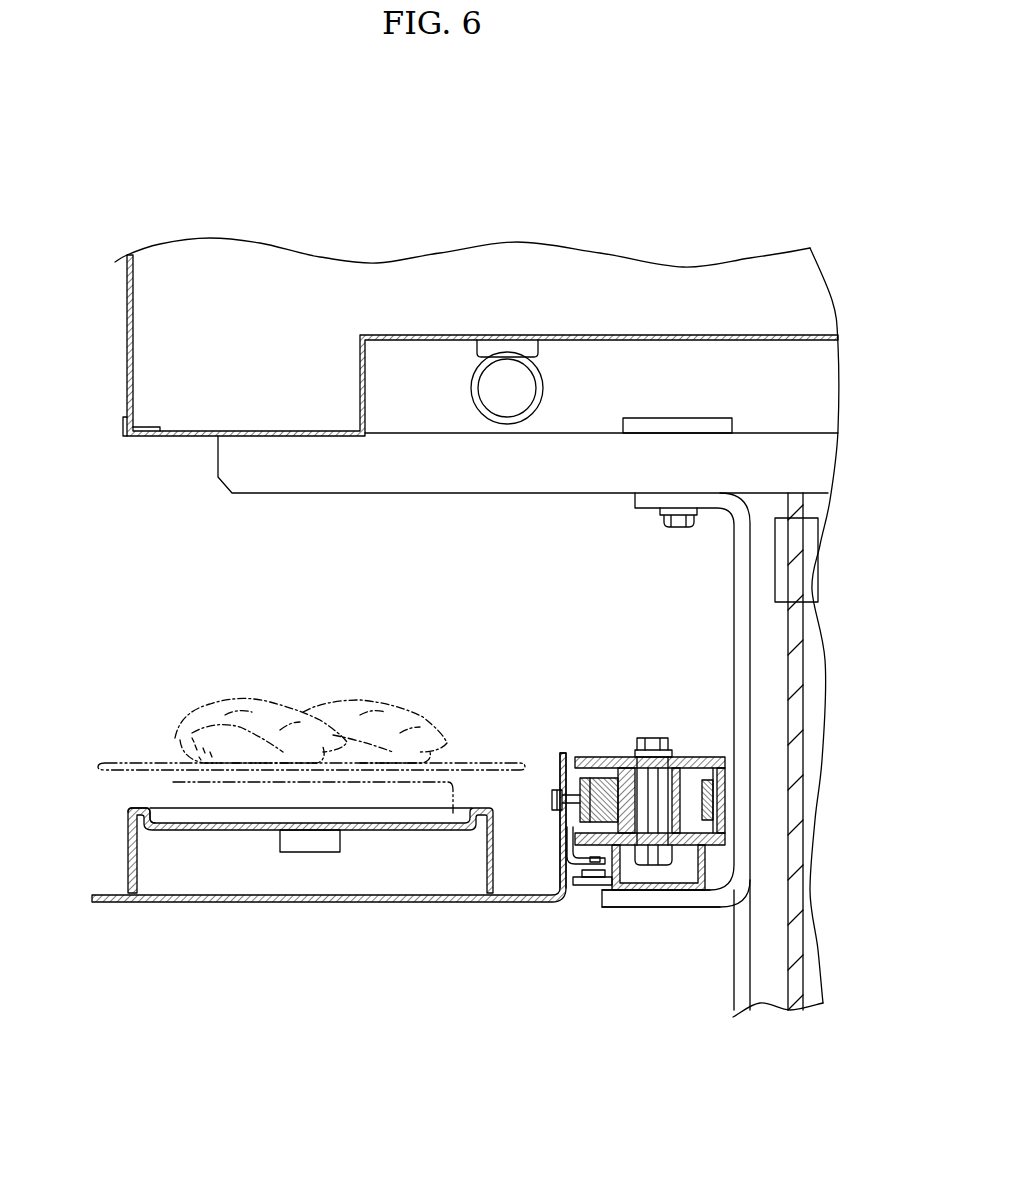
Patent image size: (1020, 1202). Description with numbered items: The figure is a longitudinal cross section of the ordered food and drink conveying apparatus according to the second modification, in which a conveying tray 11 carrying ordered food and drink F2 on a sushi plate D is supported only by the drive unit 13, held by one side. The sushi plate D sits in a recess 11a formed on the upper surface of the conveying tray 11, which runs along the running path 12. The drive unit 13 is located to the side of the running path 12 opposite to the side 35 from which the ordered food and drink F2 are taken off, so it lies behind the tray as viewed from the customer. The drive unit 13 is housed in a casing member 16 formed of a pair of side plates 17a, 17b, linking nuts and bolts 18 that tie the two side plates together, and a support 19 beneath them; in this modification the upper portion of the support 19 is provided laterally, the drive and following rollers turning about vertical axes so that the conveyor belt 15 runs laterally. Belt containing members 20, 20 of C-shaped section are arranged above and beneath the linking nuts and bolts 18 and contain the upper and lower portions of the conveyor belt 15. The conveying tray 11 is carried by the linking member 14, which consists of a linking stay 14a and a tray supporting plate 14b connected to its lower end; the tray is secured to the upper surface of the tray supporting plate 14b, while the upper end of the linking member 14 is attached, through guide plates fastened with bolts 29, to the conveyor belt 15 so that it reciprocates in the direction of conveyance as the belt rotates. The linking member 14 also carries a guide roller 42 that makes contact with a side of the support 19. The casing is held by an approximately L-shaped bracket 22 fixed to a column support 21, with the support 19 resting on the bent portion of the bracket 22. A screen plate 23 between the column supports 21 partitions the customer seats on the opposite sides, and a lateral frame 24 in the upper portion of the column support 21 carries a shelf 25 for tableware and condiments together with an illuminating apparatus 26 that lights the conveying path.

The conveying tray 11 is at (116, 846).
The recess 11a is at (170, 822).
The running path 12 is at (305, 873).
The drive unit 13 is at (649, 759).
The linking member 14 is at (334, 895).
The linking stay 14a is at (565, 832).
The tray supporting plate 14b is at (473, 902).
The conveyor belt 15 is at (578, 785).
The casing member 16 is at (665, 755).
The side plate 17a is at (632, 900).
The side plate 17b is at (722, 757).
The linking nuts and bolts 18 is at (655, 738).
The support 19 is at (665, 905).
The belt containing member 20 is at (606, 757).
The column support 21 is at (826, 727).
The bracket 22 is at (740, 578).
The screen plate 23 is at (800, 781).
The lateral frame 24 is at (492, 480).
The shelf 25 is at (127, 360).
The illuminating apparatus 26 is at (531, 388).
The bolt 29 is at (552, 800).
The side from which ordered food and drink are taken off 35 is at (74, 594).
The guide roller 42 is at (590, 888).
The sushi plate D is at (463, 762).
The ordered food and drink F2 is at (360, 700).